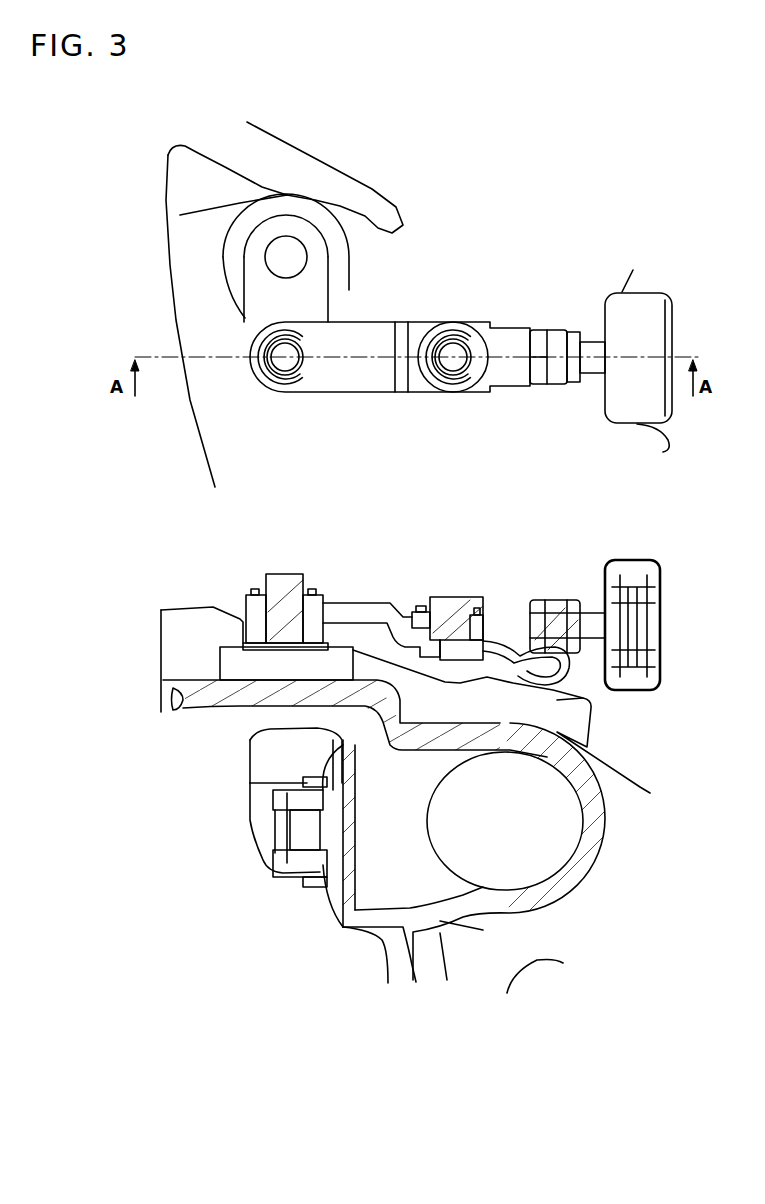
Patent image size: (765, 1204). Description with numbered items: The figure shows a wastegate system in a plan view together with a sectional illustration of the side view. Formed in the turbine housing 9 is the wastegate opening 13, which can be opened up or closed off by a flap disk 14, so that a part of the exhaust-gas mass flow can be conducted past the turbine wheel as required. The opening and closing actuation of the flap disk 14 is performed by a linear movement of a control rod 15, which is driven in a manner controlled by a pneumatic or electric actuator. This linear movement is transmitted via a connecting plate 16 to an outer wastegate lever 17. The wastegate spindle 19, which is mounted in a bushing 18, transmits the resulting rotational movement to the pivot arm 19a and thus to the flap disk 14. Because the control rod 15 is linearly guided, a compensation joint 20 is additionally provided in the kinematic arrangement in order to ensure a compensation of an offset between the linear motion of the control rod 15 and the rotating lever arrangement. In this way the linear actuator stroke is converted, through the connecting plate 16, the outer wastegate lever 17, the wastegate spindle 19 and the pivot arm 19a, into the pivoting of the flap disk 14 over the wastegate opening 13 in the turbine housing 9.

The turbine housing 9 is at (305, 938).
The wastegate opening 13 is at (370, 820).
The flap disk 14 is at (310, 832).
The control rod 15 is at (595, 358).
The connecting plate 16 is at (363, 357).
The outer wastegate lever 17 is at (264, 291).
The bushing 18 is at (283, 751).
The wastegate spindle 19 is at (291, 257).
The pivot arm 19a is at (256, 810).
The compensation joint 20 is at (453, 357).